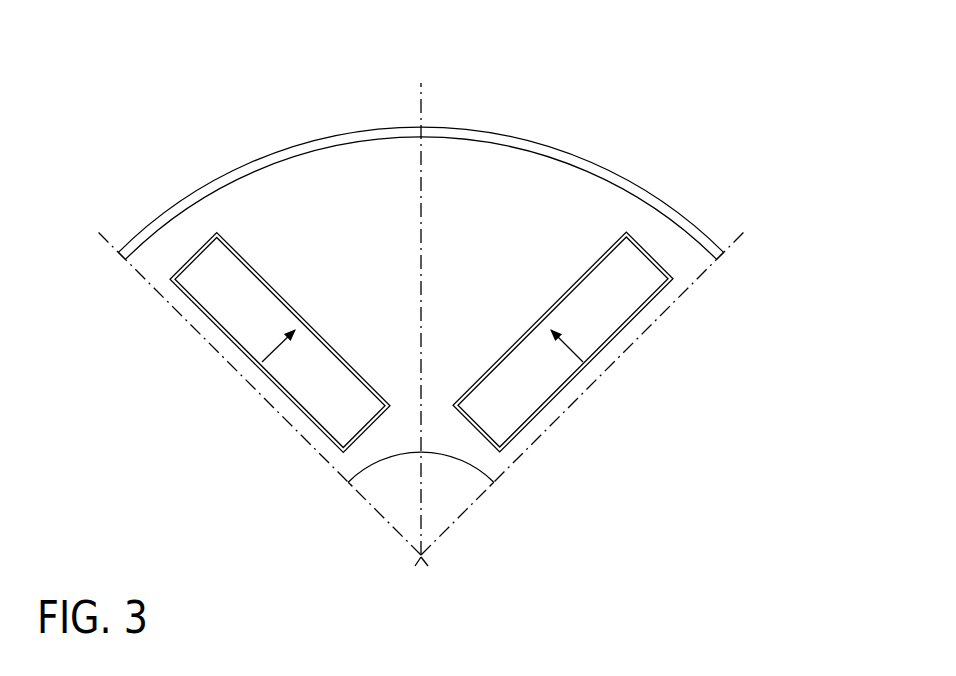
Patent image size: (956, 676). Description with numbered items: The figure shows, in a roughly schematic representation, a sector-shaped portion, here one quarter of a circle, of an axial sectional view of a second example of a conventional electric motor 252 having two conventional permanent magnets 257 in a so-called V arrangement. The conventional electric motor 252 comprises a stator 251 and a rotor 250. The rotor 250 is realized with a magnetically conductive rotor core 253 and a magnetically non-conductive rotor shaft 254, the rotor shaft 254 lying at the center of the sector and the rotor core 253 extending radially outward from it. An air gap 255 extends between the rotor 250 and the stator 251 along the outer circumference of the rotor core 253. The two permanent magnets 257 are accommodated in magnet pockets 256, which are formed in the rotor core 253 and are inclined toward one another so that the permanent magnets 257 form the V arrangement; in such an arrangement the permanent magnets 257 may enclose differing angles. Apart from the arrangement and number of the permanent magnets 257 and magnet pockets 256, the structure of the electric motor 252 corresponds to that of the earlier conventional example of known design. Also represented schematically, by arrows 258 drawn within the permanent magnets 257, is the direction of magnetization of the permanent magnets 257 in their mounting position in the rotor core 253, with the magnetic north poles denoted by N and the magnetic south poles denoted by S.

The rotor 250 is at (644, 467).
The stator 251 is at (731, 100).
The conventional electric motor 252 is at (194, 128).
The rotor core 253 is at (459, 169).
The rotor shaft 254 is at (445, 496).
The air gap 255 is at (573, 158).
The magnet pockets 256 is at (658, 262).
The permanent magnets 257 is at (614, 315).
The arrows 258 is at (277, 348).